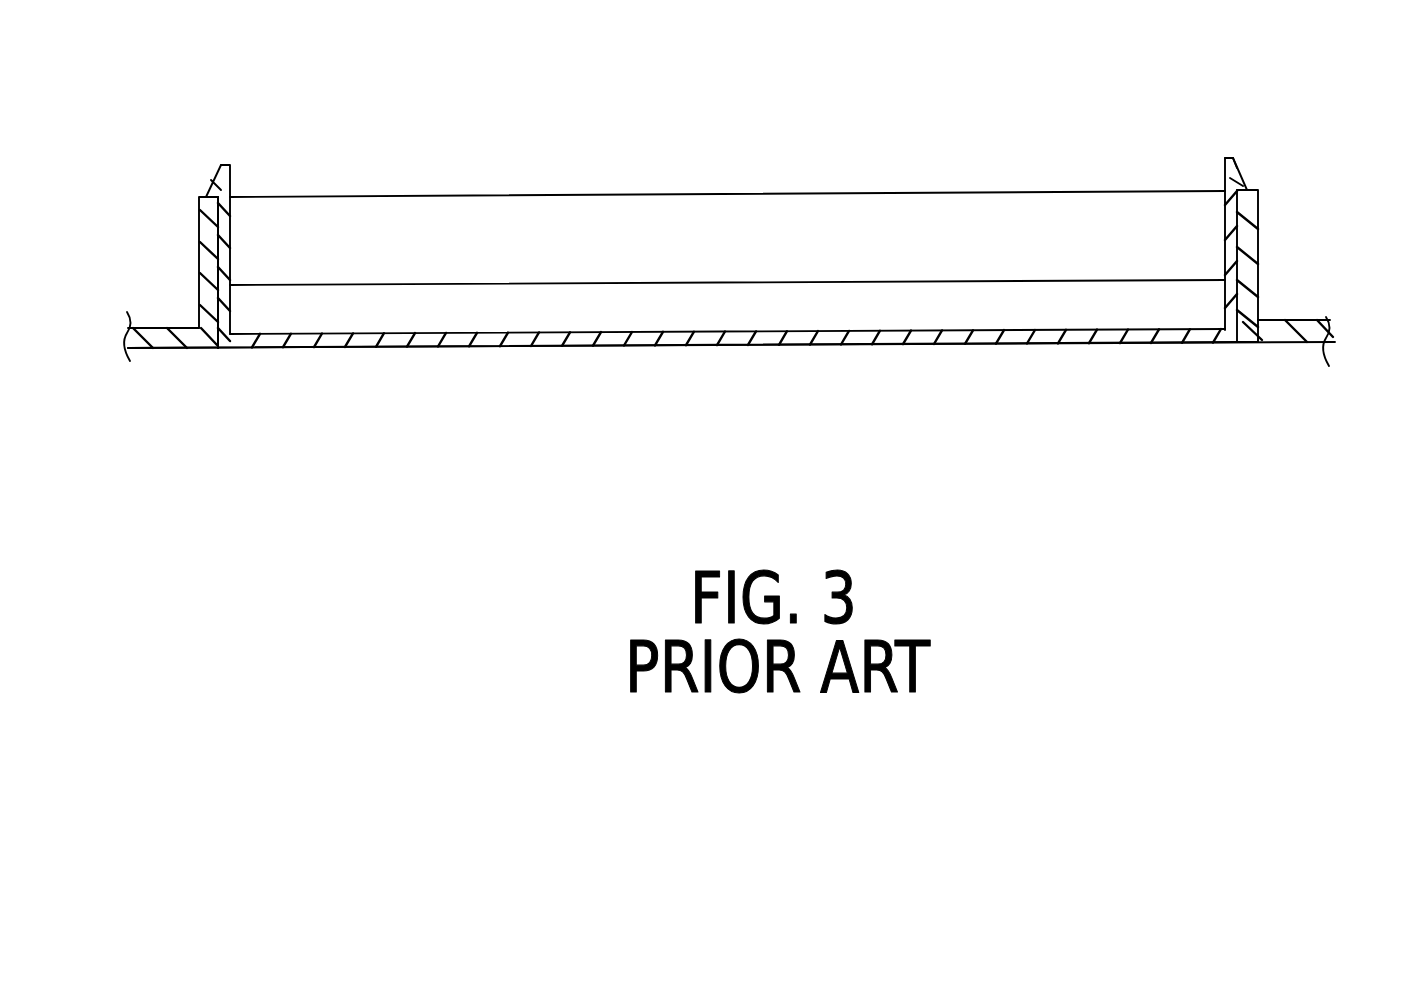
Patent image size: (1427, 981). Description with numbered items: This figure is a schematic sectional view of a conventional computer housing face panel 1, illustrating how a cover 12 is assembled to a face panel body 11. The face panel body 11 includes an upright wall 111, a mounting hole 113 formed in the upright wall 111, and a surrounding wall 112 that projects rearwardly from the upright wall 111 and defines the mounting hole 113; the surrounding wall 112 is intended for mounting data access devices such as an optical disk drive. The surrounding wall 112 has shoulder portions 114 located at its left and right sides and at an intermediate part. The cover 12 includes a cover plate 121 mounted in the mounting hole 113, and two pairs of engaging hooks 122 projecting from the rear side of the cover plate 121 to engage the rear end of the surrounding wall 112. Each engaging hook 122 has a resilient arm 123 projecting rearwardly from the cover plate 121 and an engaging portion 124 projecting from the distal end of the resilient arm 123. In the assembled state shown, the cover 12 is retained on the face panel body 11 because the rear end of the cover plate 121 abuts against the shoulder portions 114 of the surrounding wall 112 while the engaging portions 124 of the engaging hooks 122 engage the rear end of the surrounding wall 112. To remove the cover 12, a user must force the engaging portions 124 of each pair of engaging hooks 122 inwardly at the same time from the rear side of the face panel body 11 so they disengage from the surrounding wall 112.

The face panel 1 is at (859, 400).
The face panel body 11 is at (1313, 350).
The upright wall 111 is at (1278, 332).
The surrounding wall 112 is at (1258, 245).
The mounting hole 113 is at (1255, 343).
The shoulder portion 114 is at (218, 282).
The cover 12 is at (314, 359).
The cover plate 121 is at (573, 340).
The engaging hook 122 is at (239, 208).
The resilient arm 123 is at (1228, 228).
The engaging portion 124 is at (1238, 186).